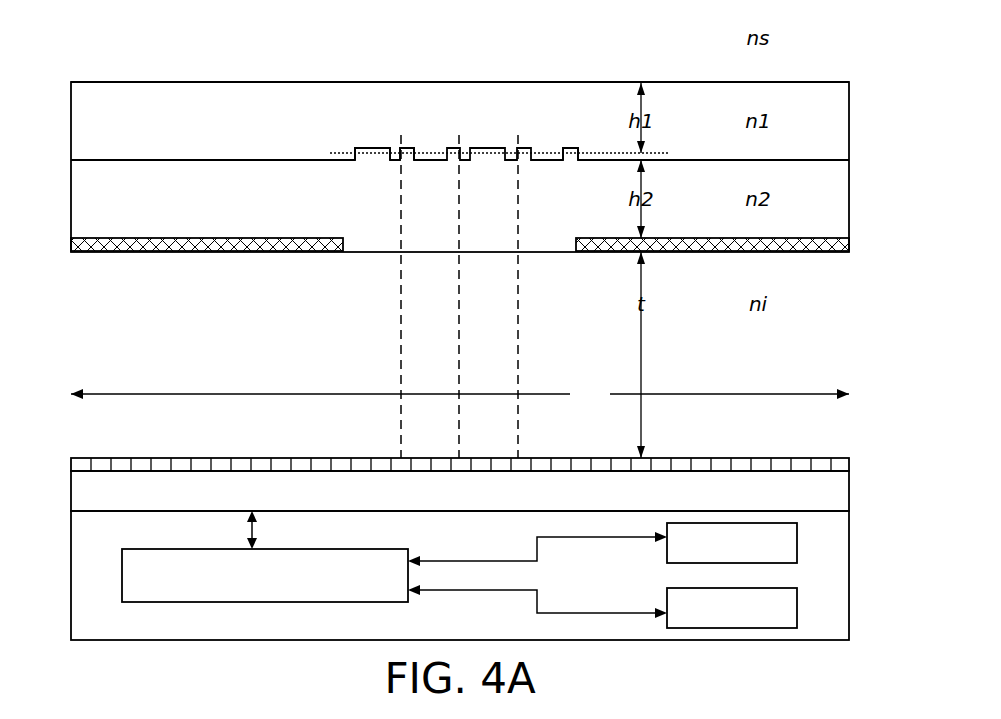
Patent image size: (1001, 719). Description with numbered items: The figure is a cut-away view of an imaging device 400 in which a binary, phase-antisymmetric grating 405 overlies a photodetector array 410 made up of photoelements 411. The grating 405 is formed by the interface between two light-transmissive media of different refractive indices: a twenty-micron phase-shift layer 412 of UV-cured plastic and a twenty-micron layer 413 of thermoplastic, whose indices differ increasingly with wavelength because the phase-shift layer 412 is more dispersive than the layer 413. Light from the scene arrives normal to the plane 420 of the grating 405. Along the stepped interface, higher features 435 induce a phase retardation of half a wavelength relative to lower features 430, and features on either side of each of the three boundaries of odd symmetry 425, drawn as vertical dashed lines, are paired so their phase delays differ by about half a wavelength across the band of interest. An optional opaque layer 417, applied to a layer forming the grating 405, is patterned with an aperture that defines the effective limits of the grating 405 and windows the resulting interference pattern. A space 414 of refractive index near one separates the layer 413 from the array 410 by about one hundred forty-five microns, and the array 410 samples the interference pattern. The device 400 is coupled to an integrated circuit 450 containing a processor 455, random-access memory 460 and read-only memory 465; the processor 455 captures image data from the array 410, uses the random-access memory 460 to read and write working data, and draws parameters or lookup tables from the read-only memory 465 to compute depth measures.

The imaging device 400 is at (121, 40).
The binary, phase-antisymmetric grating 405 is at (382, 178).
The photodetector array 410 is at (460, 491).
The photoelements 411 is at (215, 457).
The phase-shift layer 412 is at (460, 107).
The layer of thermoplastic 413 is at (460, 179).
The space 414 is at (460, 368).
The opaque layer 417 is at (178, 253).
The plane of grating 420 is at (346, 156).
The boundaries of odd symmetry 425 is at (460, 313).
The lower features 430 is at (553, 161).
The higher features 435 is at (568, 150).
The integrated circuit 450 is at (460, 575).
The processor 455 is at (265, 575).
The random-access memory 460 is at (732, 543).
The read-only memory 465 is at (732, 608).